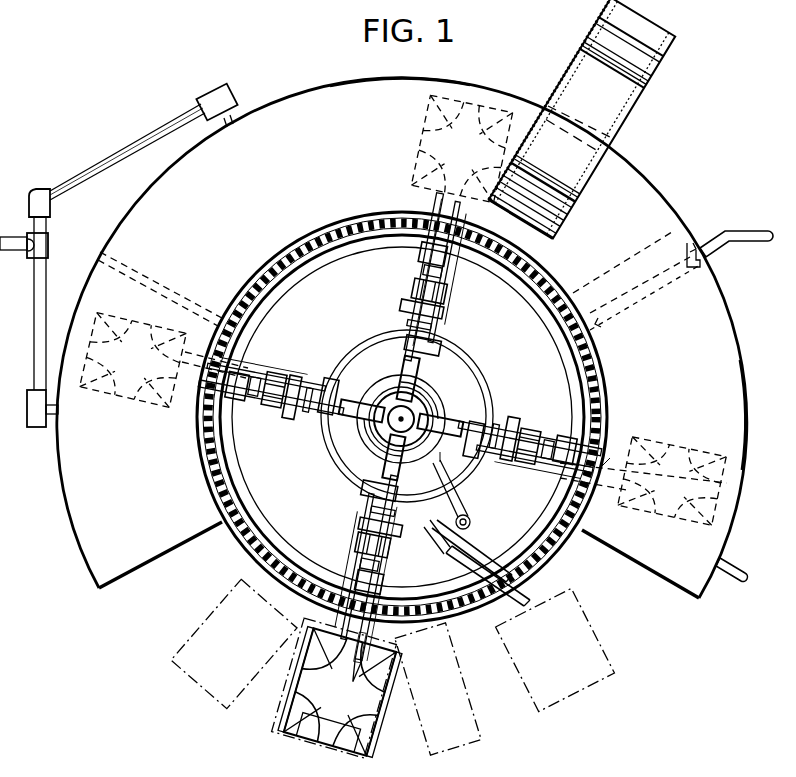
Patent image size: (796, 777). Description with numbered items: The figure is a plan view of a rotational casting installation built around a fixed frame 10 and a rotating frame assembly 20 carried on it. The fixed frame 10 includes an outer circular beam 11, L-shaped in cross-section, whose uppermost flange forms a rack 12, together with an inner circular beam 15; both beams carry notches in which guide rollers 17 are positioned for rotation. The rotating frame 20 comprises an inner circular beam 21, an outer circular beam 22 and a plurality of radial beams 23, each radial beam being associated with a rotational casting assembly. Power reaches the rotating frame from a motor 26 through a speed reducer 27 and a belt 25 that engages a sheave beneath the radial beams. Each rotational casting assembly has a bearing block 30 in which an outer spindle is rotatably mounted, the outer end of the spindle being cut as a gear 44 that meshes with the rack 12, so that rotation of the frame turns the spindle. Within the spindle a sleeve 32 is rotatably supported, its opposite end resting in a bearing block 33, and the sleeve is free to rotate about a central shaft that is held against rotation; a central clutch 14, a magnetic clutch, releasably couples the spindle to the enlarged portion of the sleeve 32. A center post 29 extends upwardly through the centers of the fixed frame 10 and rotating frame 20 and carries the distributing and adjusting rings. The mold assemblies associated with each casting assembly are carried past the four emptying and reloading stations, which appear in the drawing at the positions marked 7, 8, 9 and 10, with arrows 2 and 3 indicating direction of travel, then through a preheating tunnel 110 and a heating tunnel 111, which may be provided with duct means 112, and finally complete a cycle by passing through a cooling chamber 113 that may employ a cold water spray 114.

The direction of rotation arrow 2 is at (604, 500).
The transfer direction arrow 3 is at (612, 463).
The station I position 7 is at (487, 617).
The station II position 8 is at (398, 641).
The station III position 9 is at (300, 617).
The fixed frame 10 is at (232, 575).
The outer circular beam 11 is at (560, 532).
The rack 12 is at (224, 492).
The central clutch 14 is at (514, 458).
The inner circular beam 15 is at (389, 384).
The guide rollers 17 is at (462, 410).
The rotating frame assembly 20 is at (262, 354).
The inner circular beam 21 is at (384, 402).
The outer circular beam 22 is at (262, 540).
The radial beams 23 is at (286, 408).
The belt 25 is at (324, 467).
The motor 26 is at (522, 588).
The speed reducer 27 is at (490, 531).
The center post 29 is at (362, 462).
The bearing block 30 is at (524, 478).
The sleeve 32 is at (185, 398).
The bearing block 33 is at (482, 432).
The gear 44 is at (380, 603).
The preheating tunnel 110 is at (72, 487).
The heating tunnel 111 is at (390, 88).
The duct means 112 is at (582, 176).
The cooling chamber 113 is at (742, 414).
The cold water spray 114 is at (728, 245).